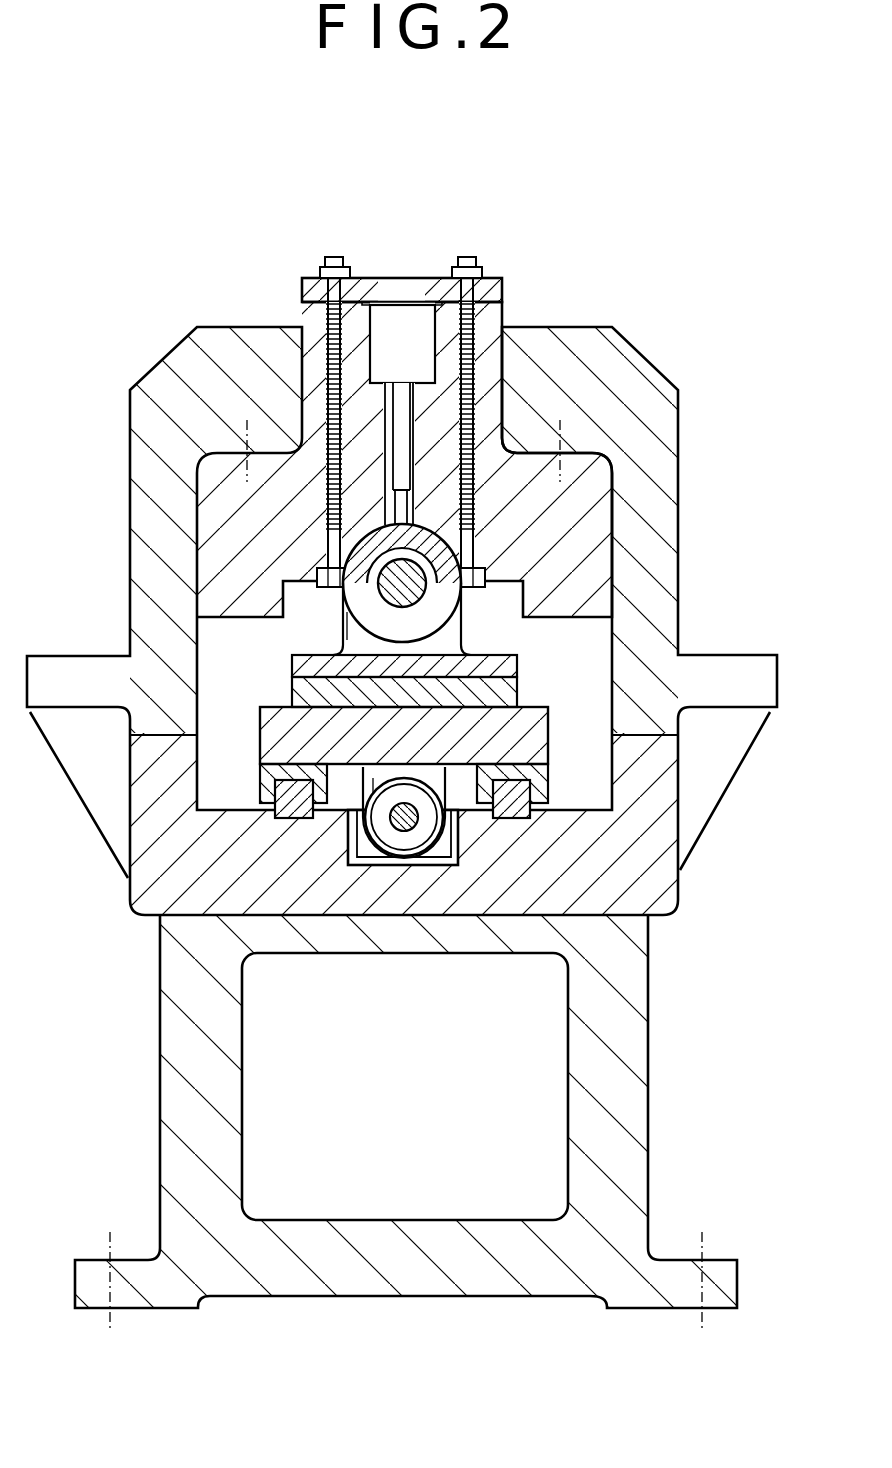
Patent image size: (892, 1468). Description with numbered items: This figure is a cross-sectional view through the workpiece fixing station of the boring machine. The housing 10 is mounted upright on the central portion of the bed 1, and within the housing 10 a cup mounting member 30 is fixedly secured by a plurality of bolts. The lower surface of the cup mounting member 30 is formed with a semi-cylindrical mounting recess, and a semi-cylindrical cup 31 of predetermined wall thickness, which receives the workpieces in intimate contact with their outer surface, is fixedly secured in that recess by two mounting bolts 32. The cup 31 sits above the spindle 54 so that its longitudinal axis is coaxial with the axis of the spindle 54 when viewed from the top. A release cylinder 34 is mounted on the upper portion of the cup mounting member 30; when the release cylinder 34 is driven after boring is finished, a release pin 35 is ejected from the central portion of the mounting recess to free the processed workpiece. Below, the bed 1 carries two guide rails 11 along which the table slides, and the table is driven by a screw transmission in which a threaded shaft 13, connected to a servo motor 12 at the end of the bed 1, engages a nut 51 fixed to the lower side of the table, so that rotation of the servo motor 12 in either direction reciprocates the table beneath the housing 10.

The bed 1 is at (618, 980).
The housing 10 is at (637, 380).
The guide rails 11 is at (162, 878).
The servo motor 12 is at (410, 827).
The threaded shaft 13 is at (408, 830).
The cup mounting member 30 is at (598, 513).
The semi-cylindrical cup 31 is at (440, 555).
The mounting bolts 32 is at (317, 312).
The release cylinder 34 is at (417, 312).
The release pin 35 is at (400, 460).
The nut 51 is at (387, 830).
The spindle 54 is at (424, 592).